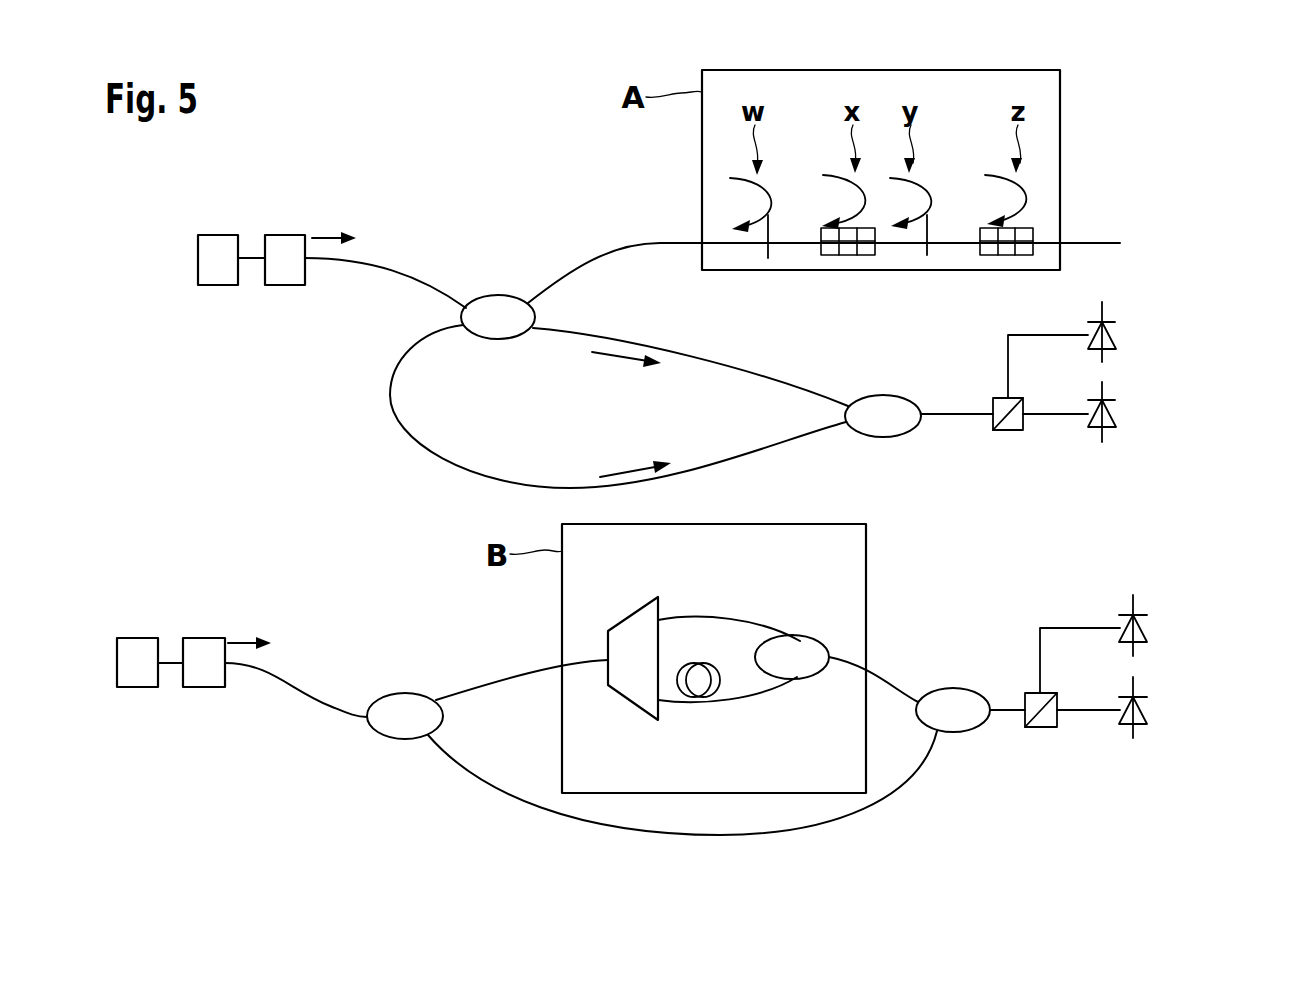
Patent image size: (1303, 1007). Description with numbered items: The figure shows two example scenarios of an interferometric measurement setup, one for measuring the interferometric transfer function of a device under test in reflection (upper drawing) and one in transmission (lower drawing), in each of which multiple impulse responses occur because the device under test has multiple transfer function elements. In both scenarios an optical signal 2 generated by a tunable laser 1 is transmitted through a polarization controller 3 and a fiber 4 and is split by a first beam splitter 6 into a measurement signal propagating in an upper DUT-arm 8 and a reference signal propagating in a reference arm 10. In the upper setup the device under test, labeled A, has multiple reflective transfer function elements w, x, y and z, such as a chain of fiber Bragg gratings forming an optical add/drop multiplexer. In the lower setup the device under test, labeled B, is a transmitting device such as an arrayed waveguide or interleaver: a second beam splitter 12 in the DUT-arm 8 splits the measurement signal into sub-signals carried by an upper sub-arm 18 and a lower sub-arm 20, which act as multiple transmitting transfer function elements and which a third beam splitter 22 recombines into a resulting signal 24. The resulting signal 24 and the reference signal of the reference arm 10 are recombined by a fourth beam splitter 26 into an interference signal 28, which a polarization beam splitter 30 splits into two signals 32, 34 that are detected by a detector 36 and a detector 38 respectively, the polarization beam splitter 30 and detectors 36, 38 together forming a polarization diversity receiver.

The tunable laser 1 is at (215, 287).
The optical signal 2 is at (322, 235).
The polarization controller 3 is at (286, 287).
The fiber 4 is at (415, 278).
The first beam splitter 6 is at (500, 294).
The DUT-arm 8 is at (522, 668).
The reference arm 10 is at (390, 387).
The second beam splitter 12 is at (628, 612).
The upper sub-arm 18 is at (715, 618).
The lower sub-arm 20 is at (742, 701).
The third beam splitter 22 is at (807, 636).
The resulting signal 24 is at (790, 358).
The fourth beam splitter 26 is at (905, 433).
The interference signal 28 is at (957, 410).
The polarization beam splitter 30 is at (1005, 432).
The signal 32 is at (1065, 333).
The signal 34 is at (1062, 416).
The detector 36 is at (1138, 341).
The detector 38 is at (1138, 418).